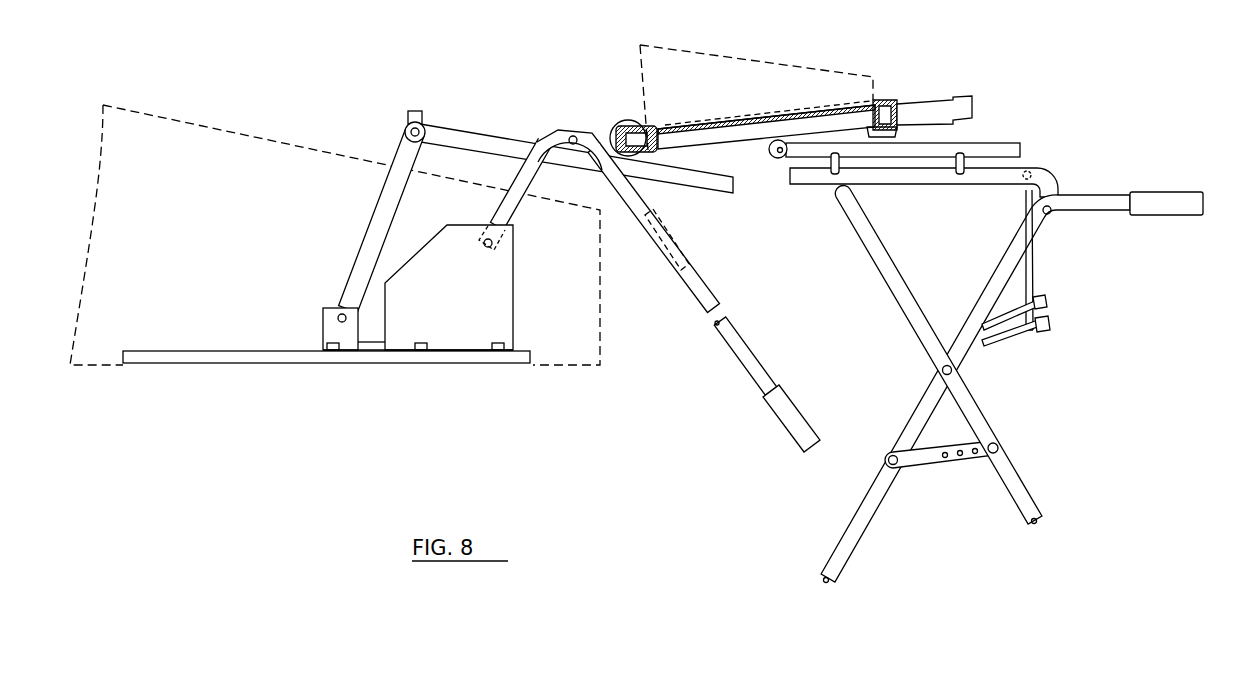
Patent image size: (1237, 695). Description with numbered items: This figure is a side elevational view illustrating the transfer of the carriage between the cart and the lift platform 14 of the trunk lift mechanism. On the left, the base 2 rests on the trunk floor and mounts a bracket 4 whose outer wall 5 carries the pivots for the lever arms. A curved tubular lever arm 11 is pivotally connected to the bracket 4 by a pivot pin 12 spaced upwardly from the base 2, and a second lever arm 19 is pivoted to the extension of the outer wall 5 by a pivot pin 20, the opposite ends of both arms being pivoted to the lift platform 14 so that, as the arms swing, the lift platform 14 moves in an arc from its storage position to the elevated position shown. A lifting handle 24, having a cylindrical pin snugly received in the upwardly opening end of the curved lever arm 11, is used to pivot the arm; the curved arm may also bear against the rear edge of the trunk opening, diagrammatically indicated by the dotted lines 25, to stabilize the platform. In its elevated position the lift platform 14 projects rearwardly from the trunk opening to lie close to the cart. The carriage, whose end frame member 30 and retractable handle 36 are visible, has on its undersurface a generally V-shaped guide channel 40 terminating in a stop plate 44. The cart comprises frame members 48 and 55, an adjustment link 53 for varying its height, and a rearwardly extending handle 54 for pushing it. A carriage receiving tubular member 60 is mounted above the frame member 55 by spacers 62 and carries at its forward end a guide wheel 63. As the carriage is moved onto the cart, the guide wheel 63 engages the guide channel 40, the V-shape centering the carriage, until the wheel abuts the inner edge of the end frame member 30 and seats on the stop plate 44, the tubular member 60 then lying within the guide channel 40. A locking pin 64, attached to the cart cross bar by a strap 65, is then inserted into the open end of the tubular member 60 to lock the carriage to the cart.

The base 2 is at (272, 361).
The bracket 4 is at (449, 287).
The outer wall 5 is at (441, 304).
The curved lever arm 11 is at (617, 200).
The pivot pin 12 is at (488, 249).
The lift platform 14 is at (462, 131).
The lever arm 19 is at (380, 197).
The pivot pin 20 is at (322, 322).
The lifting handle 24 is at (706, 294).
The dotted lines 25 is at (183, 121).
The end frame member 30 is at (620, 130).
The retractable handle 36 is at (918, 105).
The guide channel 40 is at (688, 134).
The stop plate 44 is at (654, 148).
The frame member 48 is at (880, 250).
The adjustment link 53 is at (910, 463).
The handle 54 is at (1147, 195).
The frame member 55 is at (880, 184).
The carriage receiving tubular member 60 is at (945, 149).
The spacer 62 is at (834, 175).
The guide wheel 63 is at (776, 159).
The locking pin 64 is at (1002, 341).
The strap 65 is at (1038, 281).